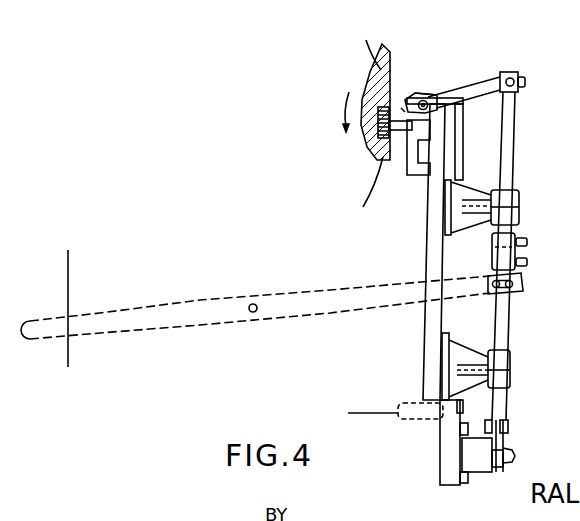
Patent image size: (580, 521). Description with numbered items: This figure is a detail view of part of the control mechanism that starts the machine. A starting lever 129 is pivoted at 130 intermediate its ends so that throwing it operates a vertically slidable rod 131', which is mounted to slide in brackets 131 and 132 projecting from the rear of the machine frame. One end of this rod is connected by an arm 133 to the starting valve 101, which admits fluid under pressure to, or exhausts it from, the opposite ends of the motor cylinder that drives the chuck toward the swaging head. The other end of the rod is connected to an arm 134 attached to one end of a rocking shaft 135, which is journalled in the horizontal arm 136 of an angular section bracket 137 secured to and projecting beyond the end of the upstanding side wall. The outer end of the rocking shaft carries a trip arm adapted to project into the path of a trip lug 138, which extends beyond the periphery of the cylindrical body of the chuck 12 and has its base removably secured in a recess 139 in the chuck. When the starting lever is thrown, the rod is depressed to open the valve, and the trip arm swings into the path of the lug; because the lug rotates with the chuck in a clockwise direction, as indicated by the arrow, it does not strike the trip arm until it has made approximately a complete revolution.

The chuck 12 is at (378, 41).
The starting valve 101 is at (480, 463).
The starting lever 129 is at (30, 337).
The pivot 130 is at (275, 272).
The bracket 131 is at (508, 207).
The vertically slidable rod 131' is at (529, 256).
The bracket 132 is at (512, 373).
The arm 133 is at (502, 437).
The arm 134 is at (488, 84).
The rocking shaft 135 is at (425, 101).
The horizontal arm 136 is at (427, 97).
The angular section bracket 137 is at (462, 117).
The trip lug 138 is at (409, 162).
The recess 139 is at (405, 110).